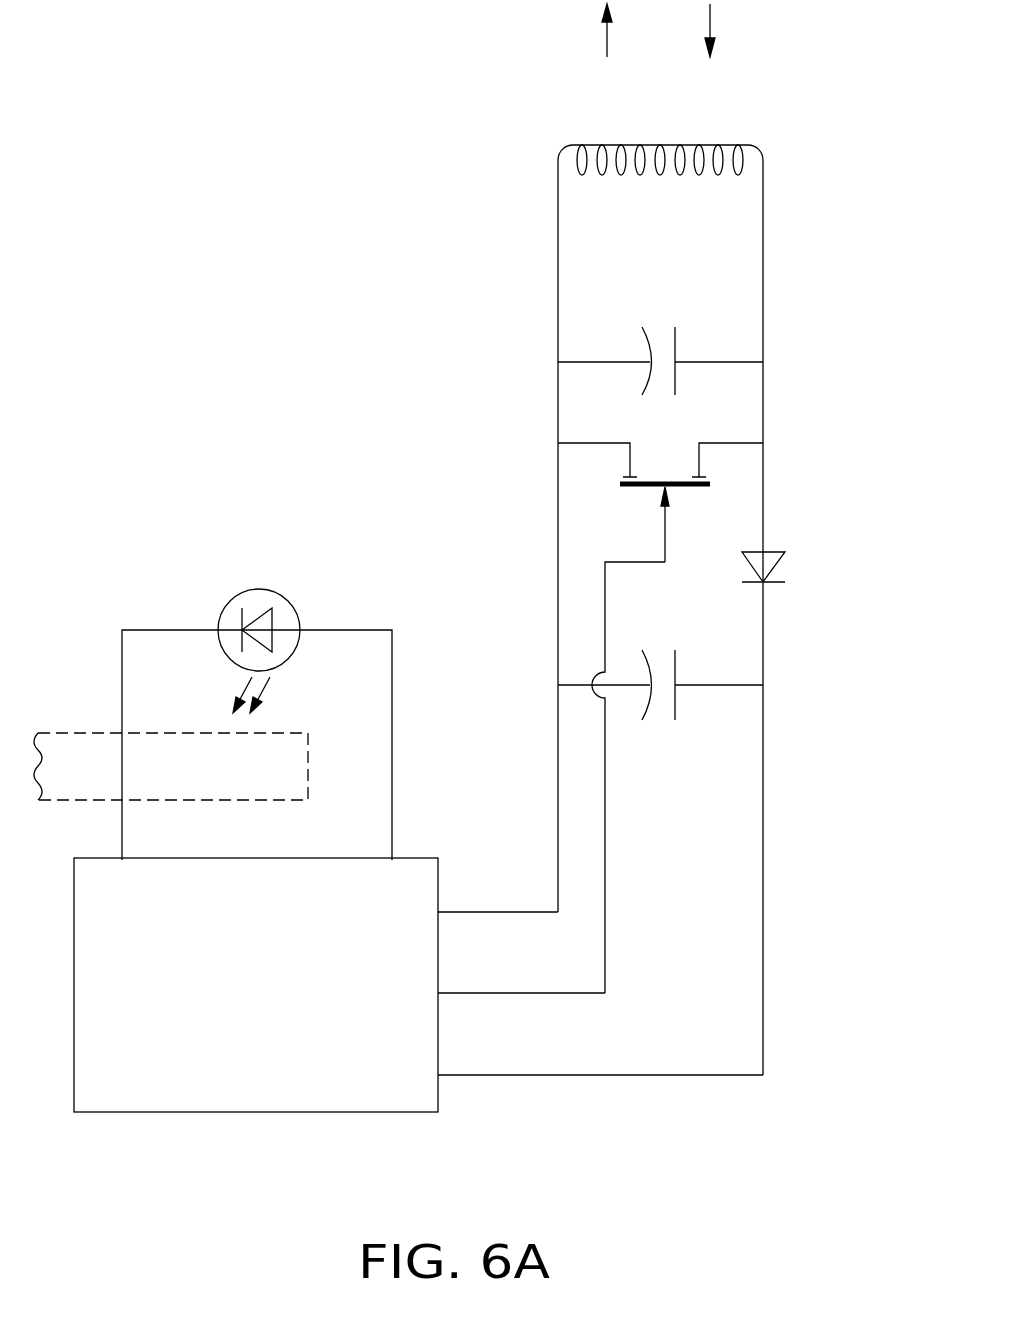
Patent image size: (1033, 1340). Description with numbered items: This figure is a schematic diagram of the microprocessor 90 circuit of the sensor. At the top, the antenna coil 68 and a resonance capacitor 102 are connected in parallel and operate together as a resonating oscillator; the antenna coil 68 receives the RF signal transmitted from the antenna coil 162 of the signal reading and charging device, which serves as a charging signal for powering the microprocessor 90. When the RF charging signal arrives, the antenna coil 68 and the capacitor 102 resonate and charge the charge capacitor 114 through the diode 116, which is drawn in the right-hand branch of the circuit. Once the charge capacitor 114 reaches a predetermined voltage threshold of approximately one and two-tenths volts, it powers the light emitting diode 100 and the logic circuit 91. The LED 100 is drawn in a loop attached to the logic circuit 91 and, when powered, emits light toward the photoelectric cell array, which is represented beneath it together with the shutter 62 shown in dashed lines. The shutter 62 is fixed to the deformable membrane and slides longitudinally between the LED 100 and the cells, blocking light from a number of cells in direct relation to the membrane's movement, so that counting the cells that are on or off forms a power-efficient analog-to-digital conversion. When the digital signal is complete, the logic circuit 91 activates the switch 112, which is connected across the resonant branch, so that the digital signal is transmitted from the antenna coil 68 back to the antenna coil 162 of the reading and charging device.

The antenna coil 162 is at (676, 39).
The antenna coil 68 is at (730, 147).
The resonance capacitor 102 is at (657, 301).
The switch 112 is at (727, 429).
The charge capacitor 114 is at (663, 732).
The diode 116 is at (774, 551).
The light emitting diode 100 is at (267, 589).
The shutter 62 is at (112, 730).
The logic circuit 91 is at (250, 1112).
The microprocessor 90 is at (690, 1137).